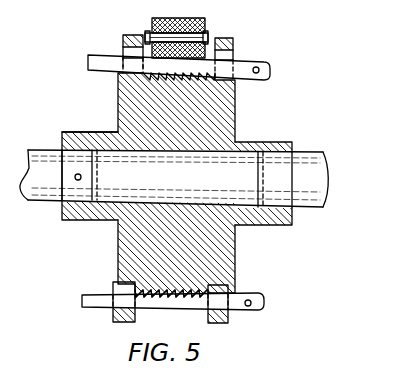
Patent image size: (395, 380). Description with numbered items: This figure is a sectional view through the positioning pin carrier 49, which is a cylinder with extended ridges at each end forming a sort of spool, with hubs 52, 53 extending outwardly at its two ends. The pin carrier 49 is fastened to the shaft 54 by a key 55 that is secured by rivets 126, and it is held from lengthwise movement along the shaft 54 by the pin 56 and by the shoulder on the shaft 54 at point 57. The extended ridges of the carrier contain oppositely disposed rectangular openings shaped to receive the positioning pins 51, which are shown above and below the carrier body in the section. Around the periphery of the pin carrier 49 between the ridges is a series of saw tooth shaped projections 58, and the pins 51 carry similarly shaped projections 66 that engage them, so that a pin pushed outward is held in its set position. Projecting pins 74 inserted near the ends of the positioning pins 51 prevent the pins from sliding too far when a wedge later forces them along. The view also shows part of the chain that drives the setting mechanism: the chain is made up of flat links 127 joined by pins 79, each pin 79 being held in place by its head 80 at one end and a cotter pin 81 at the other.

The pin carrier 49 is at (236, 127).
The positioning pins 51 is at (270, 77).
The hub 52 is at (289, 142).
The hub 53 is at (80, 136).
The shaft 54 is at (323, 165).
The key 55 is at (110, 138).
The pin 56 is at (76, 179).
The shoulder point on shaft 57 is at (290, 223).
The saw tooth shaped projections 58 is at (115, 287).
The saw tooth shaped projections on pins 66 is at (157, 298).
The projecting pins 74 is at (257, 67).
The pins 79 is at (209, 37).
The head 80 is at (214, 40).
The cotter pin 81 is at (148, 36).
The rivets 126 is at (93, 195).
The flat links 127 is at (194, 20).